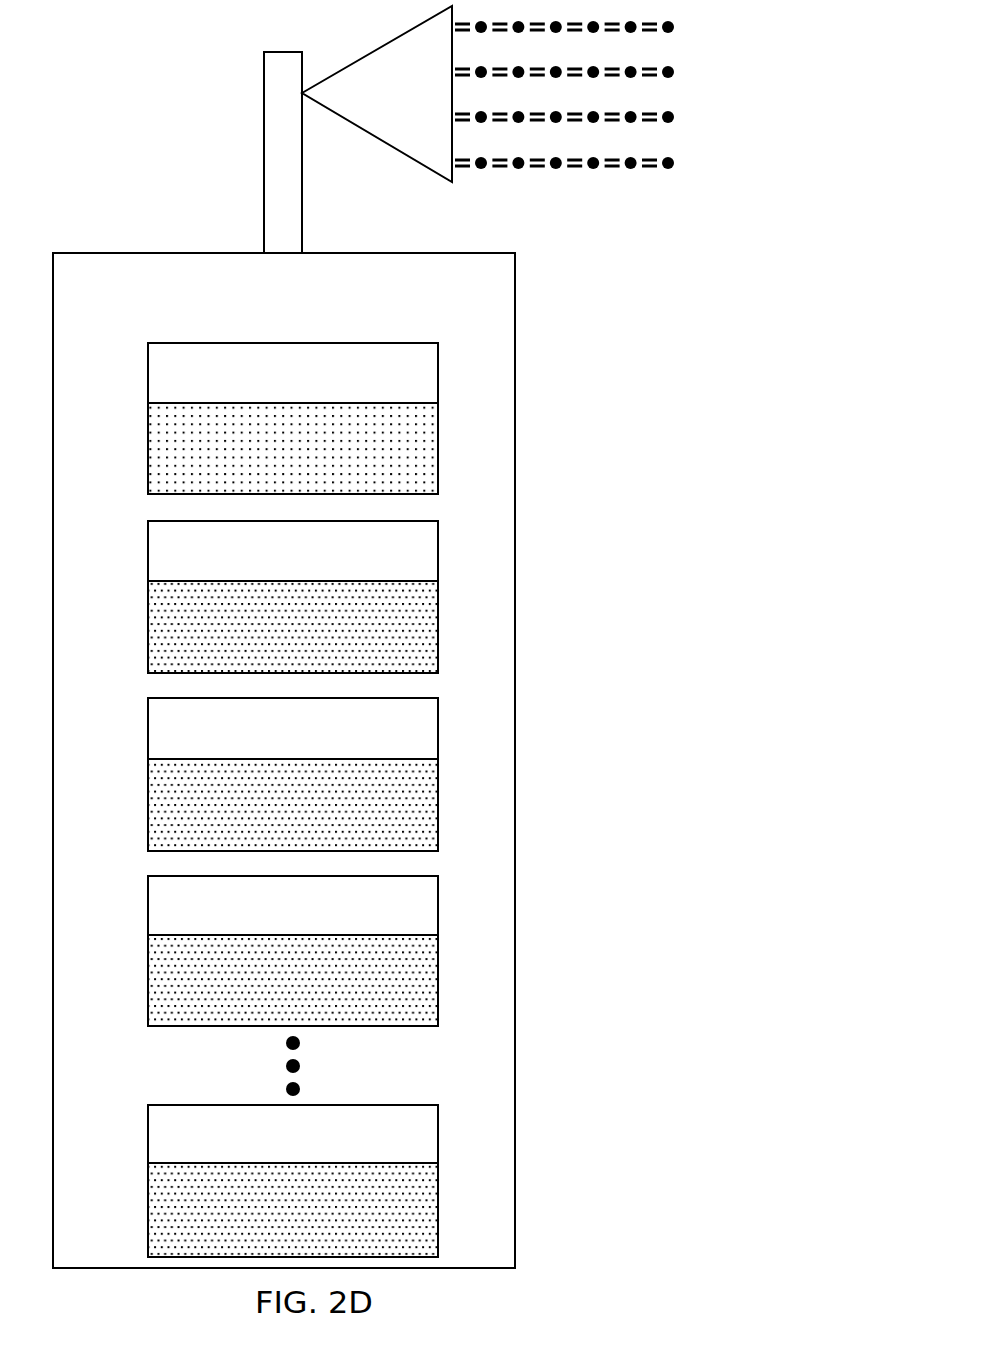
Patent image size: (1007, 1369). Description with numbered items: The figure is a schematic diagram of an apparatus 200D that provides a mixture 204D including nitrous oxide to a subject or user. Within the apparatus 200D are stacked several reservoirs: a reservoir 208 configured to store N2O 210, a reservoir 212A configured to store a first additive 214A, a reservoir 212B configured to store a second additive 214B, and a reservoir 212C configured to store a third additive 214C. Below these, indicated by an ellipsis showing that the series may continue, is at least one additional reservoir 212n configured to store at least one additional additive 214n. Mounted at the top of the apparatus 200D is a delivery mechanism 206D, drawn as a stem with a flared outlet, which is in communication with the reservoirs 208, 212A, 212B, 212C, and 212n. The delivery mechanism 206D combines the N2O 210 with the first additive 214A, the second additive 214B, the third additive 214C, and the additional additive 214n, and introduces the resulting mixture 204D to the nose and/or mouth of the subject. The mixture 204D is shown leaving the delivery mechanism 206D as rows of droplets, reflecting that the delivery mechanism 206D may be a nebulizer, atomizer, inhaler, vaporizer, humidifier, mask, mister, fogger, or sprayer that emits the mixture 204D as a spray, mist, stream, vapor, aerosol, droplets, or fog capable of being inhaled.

The apparatus 200D is at (417, 300).
The mixture 204D is at (563, 193).
The delivery mechanism 206D is at (264, 152).
The reservoir 208 is at (398, 391).
The N2O 210 is at (438, 444).
The reservoir 212A is at (418, 569).
The reservoir 212B is at (418, 748).
The reservoir 212C is at (418, 924).
The additional reservoir 212n is at (418, 1154).
The first additive 214A is at (438, 625).
The second additive 214B is at (438, 804).
The third additive 214C is at (438, 980).
The additional additive 214n is at (438, 1210).